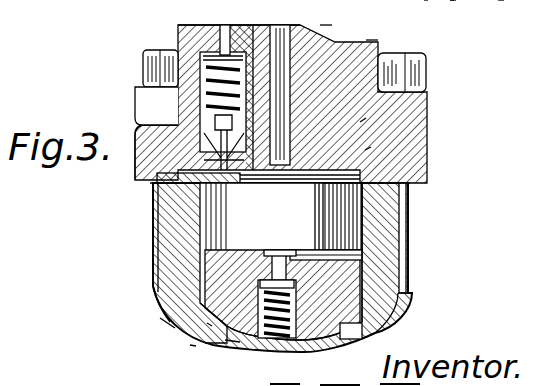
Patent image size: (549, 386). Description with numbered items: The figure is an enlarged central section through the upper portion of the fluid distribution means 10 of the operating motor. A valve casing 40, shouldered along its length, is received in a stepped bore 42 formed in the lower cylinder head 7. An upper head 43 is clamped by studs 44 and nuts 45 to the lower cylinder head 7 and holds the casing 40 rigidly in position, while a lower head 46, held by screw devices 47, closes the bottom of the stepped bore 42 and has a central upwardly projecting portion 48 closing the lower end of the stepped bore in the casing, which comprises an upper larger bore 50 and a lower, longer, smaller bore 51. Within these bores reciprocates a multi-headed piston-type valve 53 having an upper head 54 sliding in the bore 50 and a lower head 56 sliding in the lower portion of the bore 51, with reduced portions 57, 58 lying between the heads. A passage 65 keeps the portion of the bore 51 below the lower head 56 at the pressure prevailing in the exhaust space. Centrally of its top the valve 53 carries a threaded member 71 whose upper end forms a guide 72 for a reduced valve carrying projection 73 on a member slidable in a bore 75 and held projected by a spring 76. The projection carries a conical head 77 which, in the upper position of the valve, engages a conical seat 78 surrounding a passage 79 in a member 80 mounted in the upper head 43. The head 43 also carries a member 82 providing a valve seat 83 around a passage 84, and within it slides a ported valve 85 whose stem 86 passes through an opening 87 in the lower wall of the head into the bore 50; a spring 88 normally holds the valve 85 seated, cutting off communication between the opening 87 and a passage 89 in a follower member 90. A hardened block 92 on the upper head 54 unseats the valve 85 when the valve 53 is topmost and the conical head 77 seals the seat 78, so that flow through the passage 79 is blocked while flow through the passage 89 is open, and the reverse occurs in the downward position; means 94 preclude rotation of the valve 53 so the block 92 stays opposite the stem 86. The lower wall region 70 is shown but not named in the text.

The lower cylinder head 7 is at (415, 310).
The fluid distribution means 10 is at (417, 229).
The valve casing 40 is at (150, 281).
The stepped bore 42 is at (150, 303).
The upper head 43 is at (428, 163).
The studs 44 is at (153, 252).
The nuts 45 is at (152, 50).
The lower head 46 is at (499, 6).
The screw devices 47 is at (451, 0).
The central upwardly projecting portion 48 is at (437, 16).
The upper larger bore 50 is at (157, 260).
The lower smaller bore 51 is at (380, 334).
The multi-headed piston-type valve 53 is at (170, 326).
The upper head 54 is at (177, 320).
The lower head 56 is at (424, 0).
The reduced portion 57 is at (192, 343).
The reduced portion 58 is at (324, 12).
The passage 65 is at (371, 20).
The bottom wall 70 is at (207, 323).
The member 71 is at (226, 339).
The guide 72 is at (362, 272).
The reduced valve carrying projection 73 is at (365, 232).
The bore 75 is at (252, 338).
The spring 76 is at (278, 338).
The conical head 77 is at (398, 203).
The conical seat 78 is at (365, 150).
The passage 79 is at (360, 122).
The member 80 is at (281, 27).
The member 82 is at (203, 100).
The valve seat 83 is at (160, 173).
The passage 84 is at (215, 167).
The ported valve 85 is at (205, 127).
The stem 86 is at (200, 255).
The opening 87 is at (182, 200).
The spring 88 is at (186, 72).
The passage 89 is at (227, 27).
The follower member 90 is at (181, 28).
The hardened block 92 is at (180, 286).
The means to preclude rotation 94 is at (406, 186).